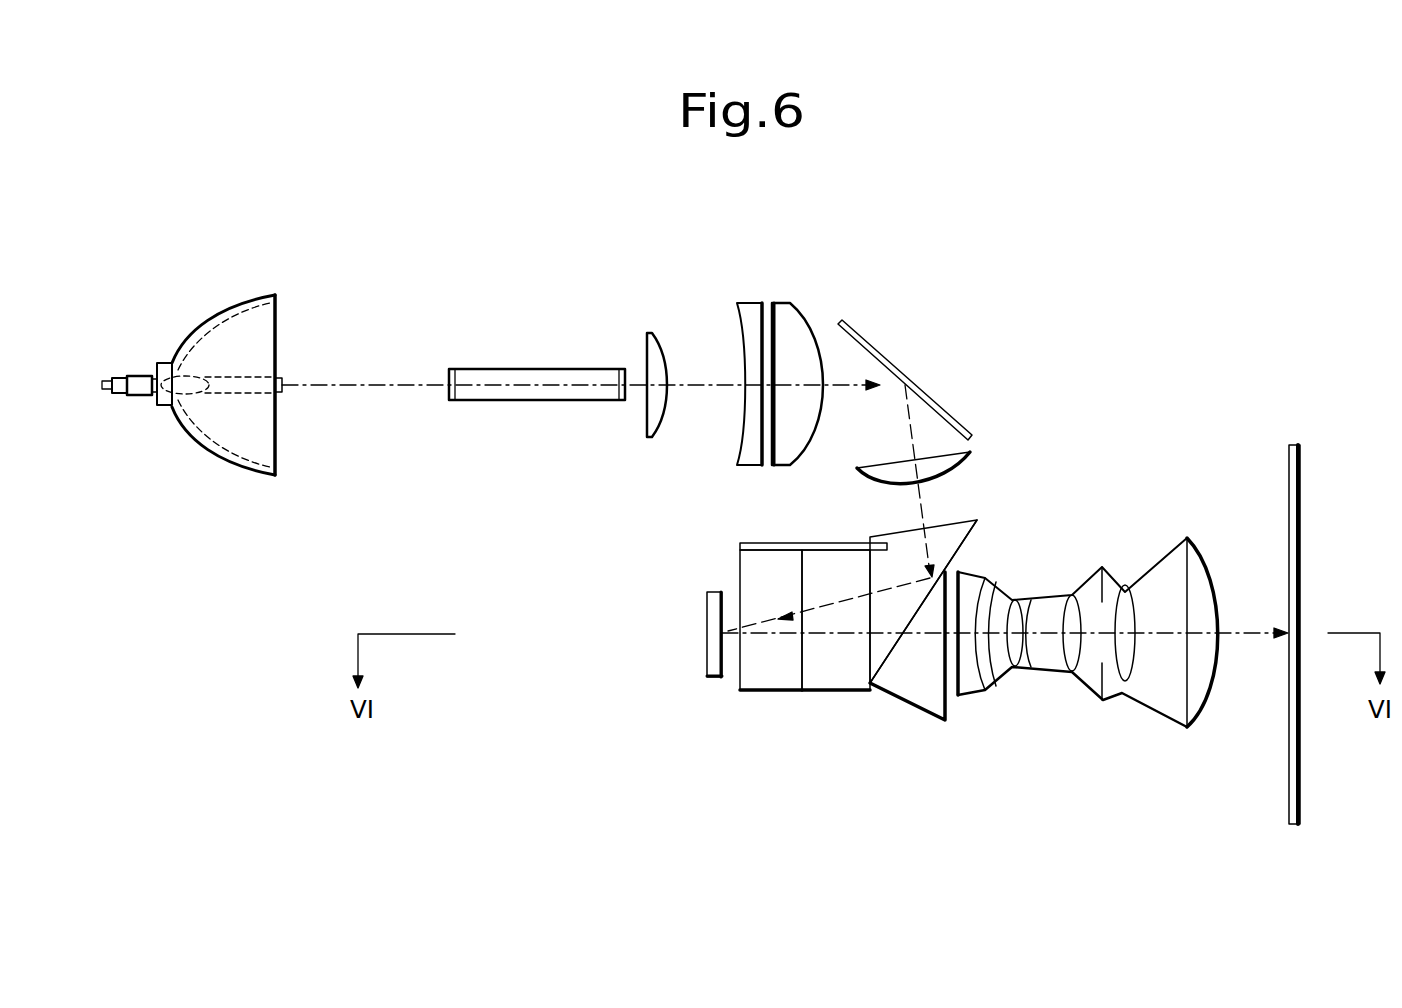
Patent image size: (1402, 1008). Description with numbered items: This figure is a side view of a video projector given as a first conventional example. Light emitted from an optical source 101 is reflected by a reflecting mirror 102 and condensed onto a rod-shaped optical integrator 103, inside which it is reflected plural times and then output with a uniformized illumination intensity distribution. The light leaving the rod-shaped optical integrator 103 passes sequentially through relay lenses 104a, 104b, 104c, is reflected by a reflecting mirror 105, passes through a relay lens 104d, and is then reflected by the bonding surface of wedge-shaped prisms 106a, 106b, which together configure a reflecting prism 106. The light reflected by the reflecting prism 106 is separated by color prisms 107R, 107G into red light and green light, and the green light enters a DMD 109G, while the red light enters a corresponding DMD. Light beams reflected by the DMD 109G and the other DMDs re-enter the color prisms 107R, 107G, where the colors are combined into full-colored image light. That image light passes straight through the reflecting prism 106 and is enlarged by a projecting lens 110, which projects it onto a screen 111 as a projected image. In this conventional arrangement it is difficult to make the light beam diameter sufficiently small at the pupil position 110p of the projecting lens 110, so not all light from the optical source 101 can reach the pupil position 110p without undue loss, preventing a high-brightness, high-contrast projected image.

The optical source 101 is at (172, 358).
The reflecting mirror 102 is at (242, 293).
The rod-shaped optical integrator 103 is at (500, 368).
The relay lens 104a is at (666, 345).
The relay lens 104b is at (757, 302).
The relay lens 104c is at (802, 315).
The relay lens 104d is at (863, 475).
The reflecting mirror 105 is at (917, 380).
The reflecting prism 106 is at (960, 518).
The wedge-shaped prism 106a is at (950, 545).
The wedge-shaped prism 106b is at (917, 688).
The color prism 107G is at (755, 693).
The color prism 107R is at (815, 693).
The DMD 109G is at (712, 654).
The projecting lens 110 is at (1022, 670).
The pupil position 110p is at (1113, 688).
The screen 111 is at (1293, 444).